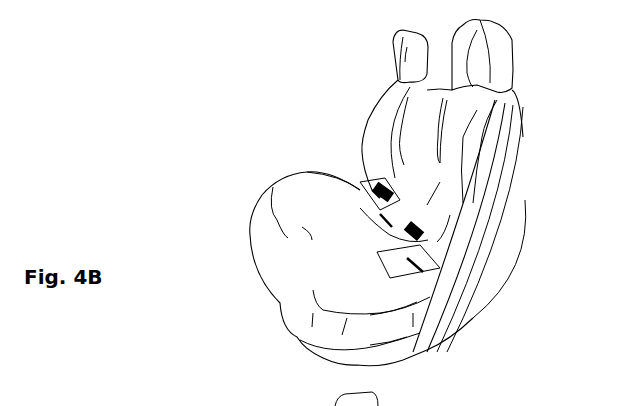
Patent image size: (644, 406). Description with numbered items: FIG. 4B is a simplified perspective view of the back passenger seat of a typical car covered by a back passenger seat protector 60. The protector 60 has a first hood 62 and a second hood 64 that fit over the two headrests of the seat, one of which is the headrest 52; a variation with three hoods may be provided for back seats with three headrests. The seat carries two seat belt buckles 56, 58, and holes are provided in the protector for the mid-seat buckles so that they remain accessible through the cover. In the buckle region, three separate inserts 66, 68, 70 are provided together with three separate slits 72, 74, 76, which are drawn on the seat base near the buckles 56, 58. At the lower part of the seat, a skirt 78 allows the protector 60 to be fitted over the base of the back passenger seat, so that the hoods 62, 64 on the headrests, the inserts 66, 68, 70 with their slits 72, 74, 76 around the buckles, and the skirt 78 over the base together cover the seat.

The headrest 52 is at (335, 403).
The seat belt buckle 56 is at (372, 193).
The seat belt buckle 58 is at (405, 228).
The back passenger seat protector 60 is at (262, 160).
The first hood 62 is at (470, 62).
The second hood 64 is at (398, 57).
The insert 66 is at (368, 192).
The insert 68 is at (388, 205).
The insert 70 is at (402, 268).
The slit 72 is at (371, 191).
The slit 74 is at (400, 220).
The slit 76 is at (420, 273).
The skirt 78 is at (297, 302).